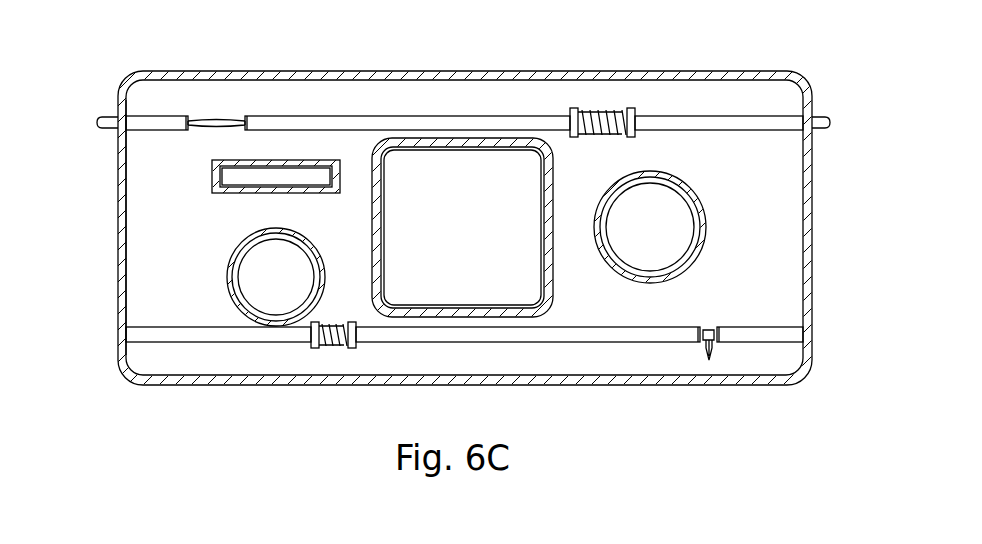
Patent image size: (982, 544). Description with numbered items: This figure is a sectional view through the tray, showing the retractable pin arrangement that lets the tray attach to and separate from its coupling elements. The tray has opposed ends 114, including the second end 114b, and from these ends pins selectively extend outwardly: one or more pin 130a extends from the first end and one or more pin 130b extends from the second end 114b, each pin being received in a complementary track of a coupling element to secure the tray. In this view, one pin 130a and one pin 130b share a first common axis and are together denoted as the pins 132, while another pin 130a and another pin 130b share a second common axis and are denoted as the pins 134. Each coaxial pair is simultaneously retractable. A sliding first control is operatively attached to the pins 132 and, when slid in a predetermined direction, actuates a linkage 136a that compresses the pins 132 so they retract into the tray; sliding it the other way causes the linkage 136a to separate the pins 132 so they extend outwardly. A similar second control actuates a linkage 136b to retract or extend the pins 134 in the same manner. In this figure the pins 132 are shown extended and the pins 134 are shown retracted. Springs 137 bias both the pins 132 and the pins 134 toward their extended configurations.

The first and second ends 114 is at (812, 238).
The second end 114b is at (119, 240).
The pin 130a is at (818, 113).
The pin 130b is at (108, 117).
The pins sharing the first common axis 132 is at (150, 326).
The pins sharing the second common axis 134 is at (110, 130).
The linkage 136a is at (707, 345).
The linkage 136b is at (231, 118).
The springs 137 is at (605, 110).